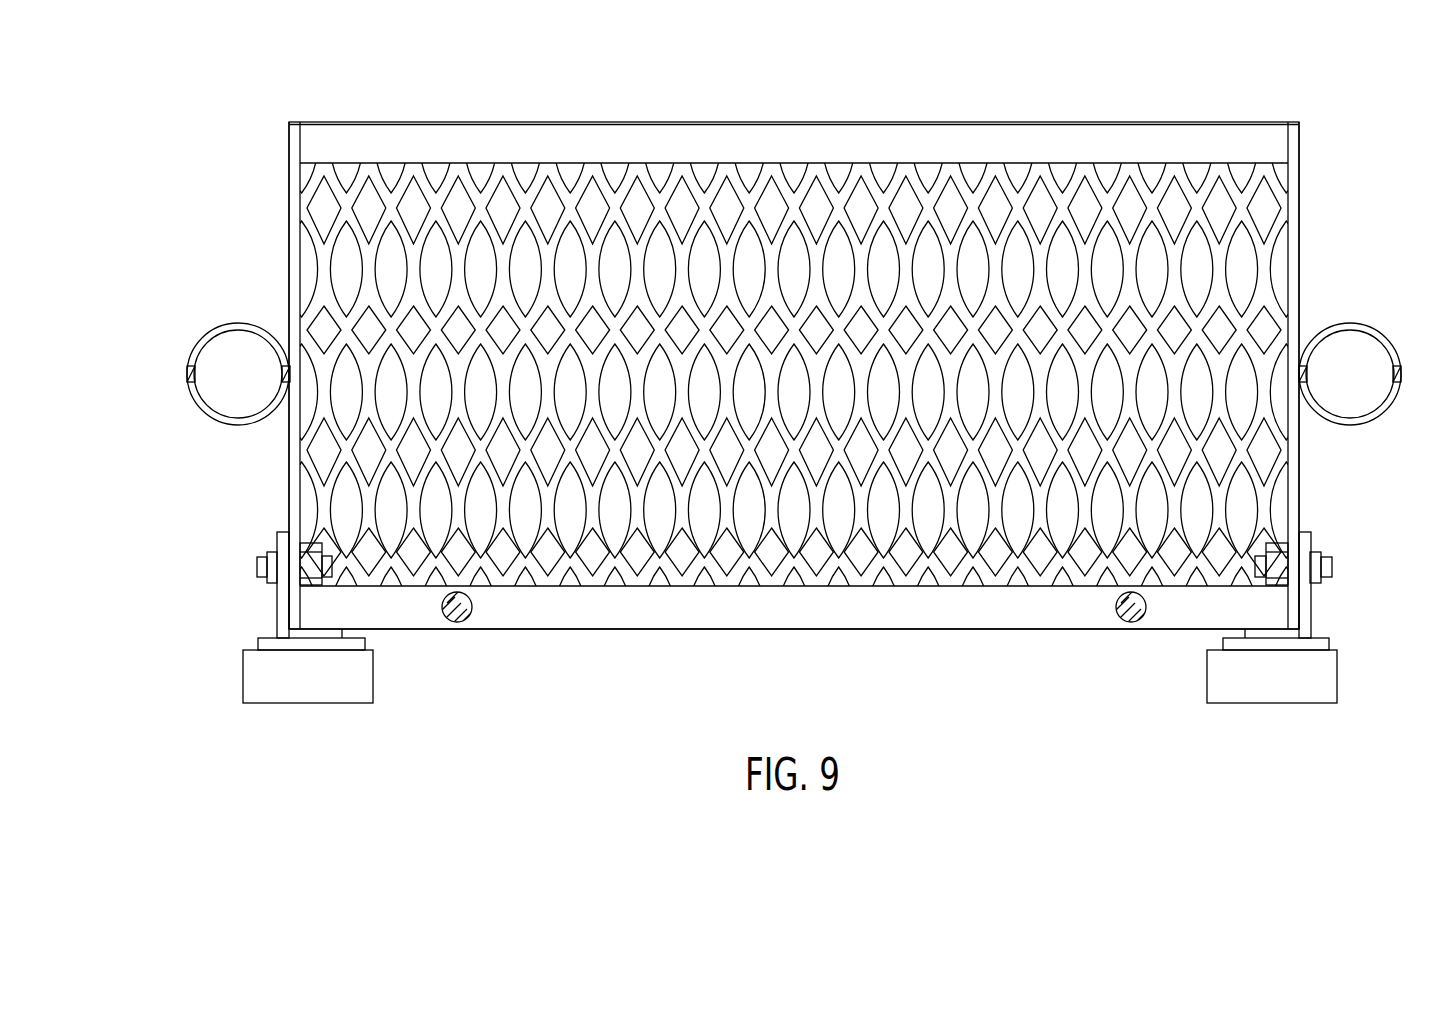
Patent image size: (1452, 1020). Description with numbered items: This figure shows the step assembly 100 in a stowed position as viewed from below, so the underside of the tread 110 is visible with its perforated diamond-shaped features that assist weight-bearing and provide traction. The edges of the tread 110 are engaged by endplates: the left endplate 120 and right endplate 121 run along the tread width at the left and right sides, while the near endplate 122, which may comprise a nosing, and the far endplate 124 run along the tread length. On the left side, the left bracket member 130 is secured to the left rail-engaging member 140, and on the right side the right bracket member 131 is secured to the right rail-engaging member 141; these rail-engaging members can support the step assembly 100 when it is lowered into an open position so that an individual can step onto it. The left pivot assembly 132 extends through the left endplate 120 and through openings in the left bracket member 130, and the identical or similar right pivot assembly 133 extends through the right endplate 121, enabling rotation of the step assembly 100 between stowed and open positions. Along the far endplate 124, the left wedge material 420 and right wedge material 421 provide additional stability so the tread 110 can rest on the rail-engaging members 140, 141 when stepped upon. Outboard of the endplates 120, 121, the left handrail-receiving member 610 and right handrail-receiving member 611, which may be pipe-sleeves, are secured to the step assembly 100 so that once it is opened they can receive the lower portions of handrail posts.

The step assembly 100 is at (360, 728).
The tread 110 is at (305, 215).
The left endplate 120 is at (288, 455).
The right endplate 121 is at (1300, 290).
The near endplate 122 is at (820, 122).
The far endplate 124 is at (820, 630).
The left bracket member 130 is at (284, 608).
The right bracket member 131 is at (1305, 606).
The left pivot assembly 132 is at (257, 567).
The right pivot assembly 133 is at (1332, 567).
The left rail-engaging member 140 is at (253, 673).
The right rail-engaging member 141 is at (1325, 677).
The left wedge material 420 is at (460, 621).
The right wedge material 421 is at (1131, 621).
The left handrail-receiving member 610 is at (210, 412).
The right handrail-receiving member 611 is at (1375, 413).